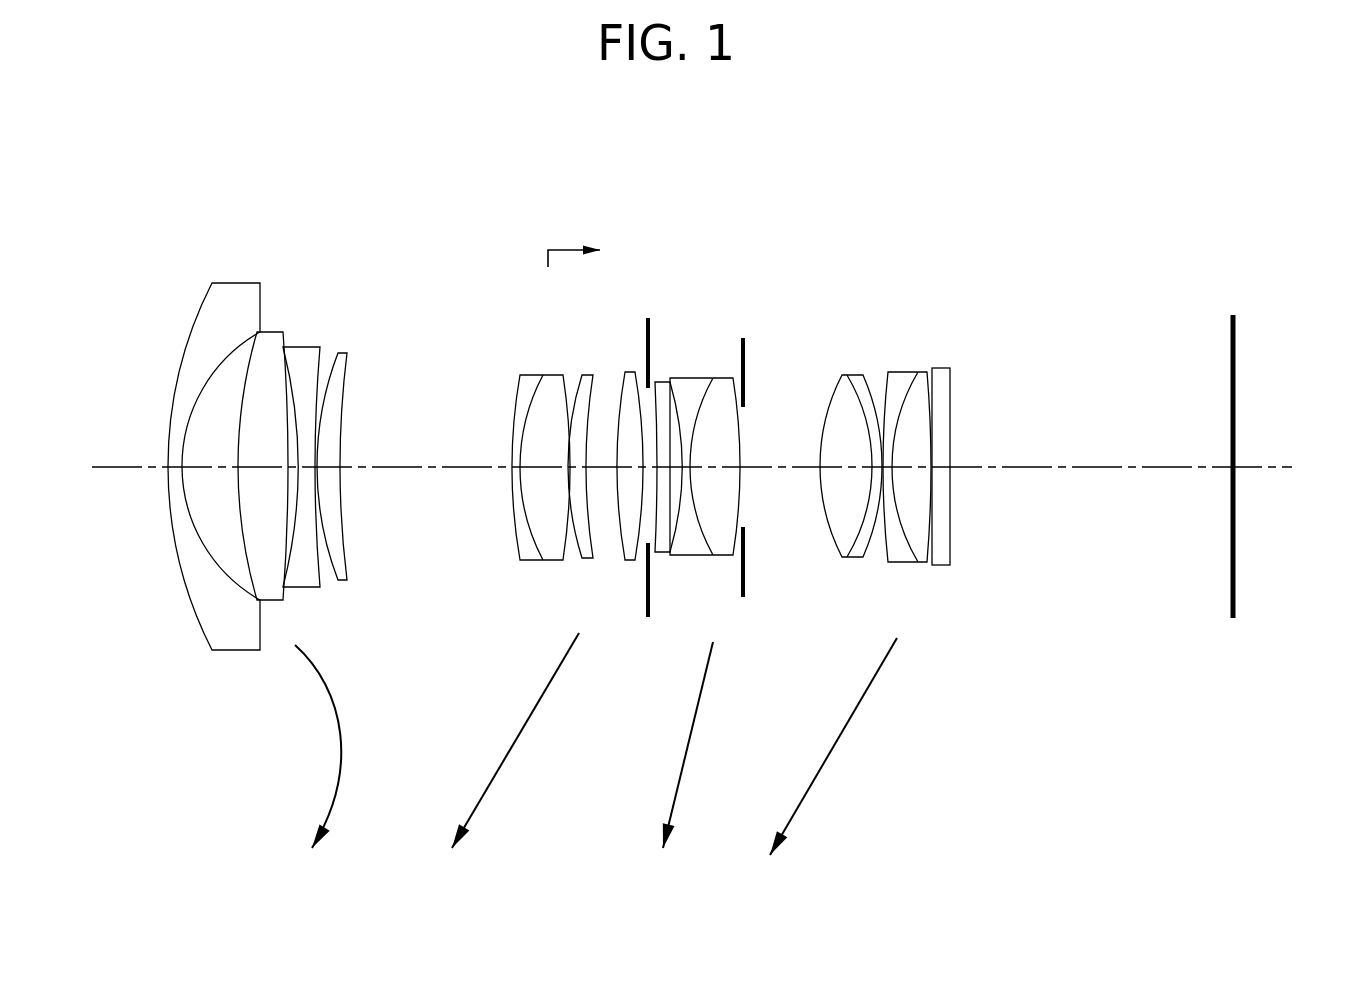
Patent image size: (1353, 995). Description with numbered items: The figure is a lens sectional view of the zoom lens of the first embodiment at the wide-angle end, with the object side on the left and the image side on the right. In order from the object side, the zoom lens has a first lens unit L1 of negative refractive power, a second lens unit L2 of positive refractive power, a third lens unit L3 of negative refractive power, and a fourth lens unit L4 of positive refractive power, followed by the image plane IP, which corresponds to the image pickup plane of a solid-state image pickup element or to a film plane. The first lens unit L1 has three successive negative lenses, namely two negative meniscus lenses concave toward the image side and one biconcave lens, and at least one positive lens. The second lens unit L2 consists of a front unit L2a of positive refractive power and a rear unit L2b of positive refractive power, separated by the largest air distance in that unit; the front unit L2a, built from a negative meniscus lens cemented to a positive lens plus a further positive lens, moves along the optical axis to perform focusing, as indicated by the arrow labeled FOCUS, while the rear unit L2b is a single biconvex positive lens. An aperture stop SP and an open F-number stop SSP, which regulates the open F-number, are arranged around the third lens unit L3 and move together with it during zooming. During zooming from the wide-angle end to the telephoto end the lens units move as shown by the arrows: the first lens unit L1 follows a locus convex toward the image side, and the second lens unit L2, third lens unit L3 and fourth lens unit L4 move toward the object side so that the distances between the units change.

The first lens unit L1 is at (355, 190).
The second lens unit L2 is at (502, 190).
The front unit L2a is at (597, 290).
The rear unit L2b is at (613, 290).
The focusing movement of lens subunit L2a FOCUS is at (571, 239).
The third lens unit L3 is at (755, 190).
The fourth lens unit L4 is at (960, 190).
The aperture stop SP is at (650, 326).
The open Fno stop SSP is at (745, 348).
The image plane IP is at (1237, 347).